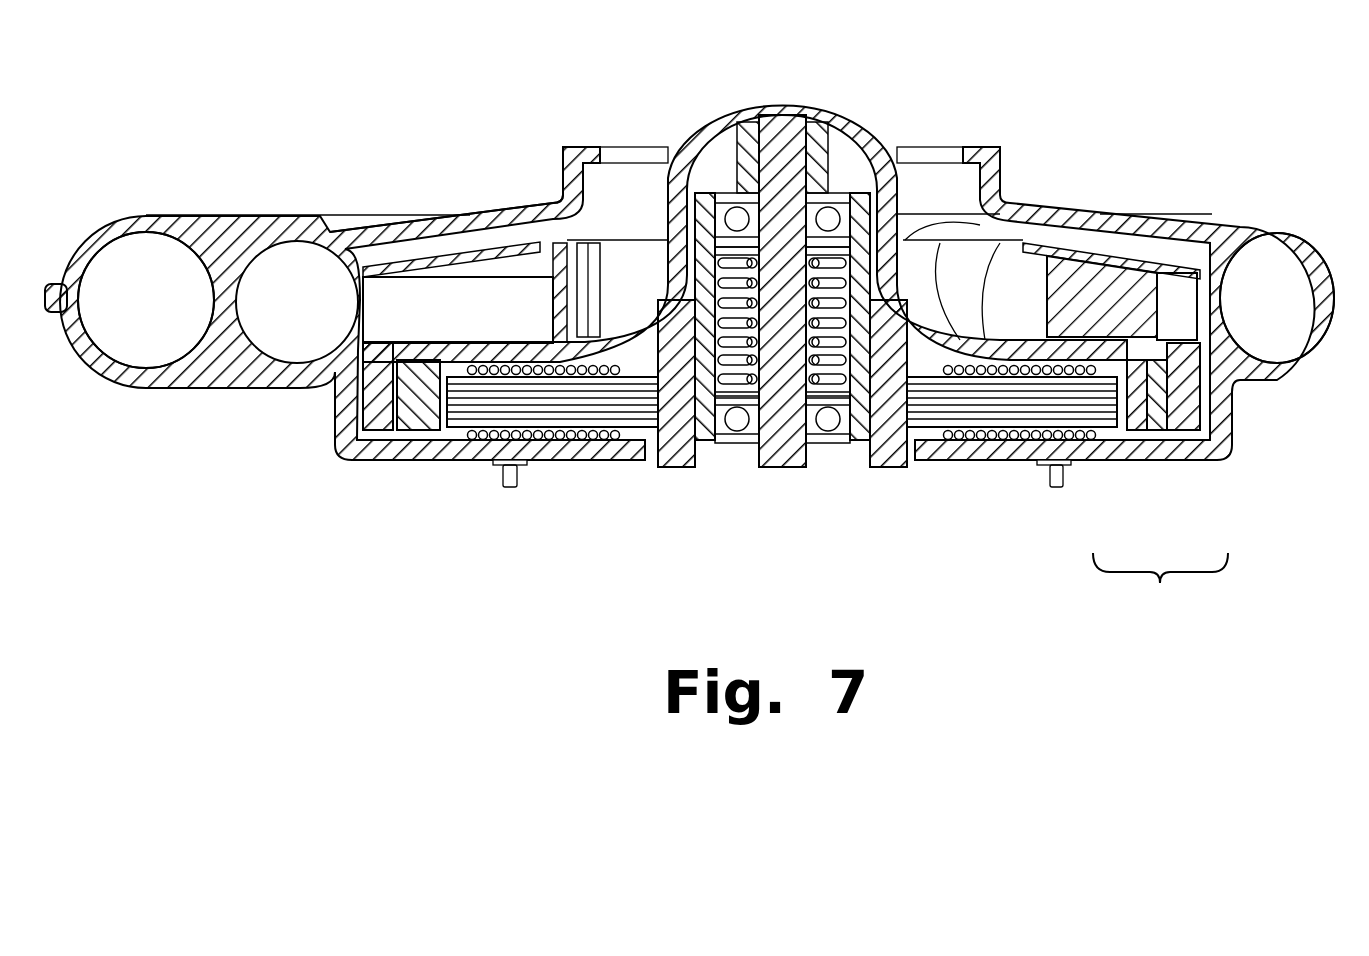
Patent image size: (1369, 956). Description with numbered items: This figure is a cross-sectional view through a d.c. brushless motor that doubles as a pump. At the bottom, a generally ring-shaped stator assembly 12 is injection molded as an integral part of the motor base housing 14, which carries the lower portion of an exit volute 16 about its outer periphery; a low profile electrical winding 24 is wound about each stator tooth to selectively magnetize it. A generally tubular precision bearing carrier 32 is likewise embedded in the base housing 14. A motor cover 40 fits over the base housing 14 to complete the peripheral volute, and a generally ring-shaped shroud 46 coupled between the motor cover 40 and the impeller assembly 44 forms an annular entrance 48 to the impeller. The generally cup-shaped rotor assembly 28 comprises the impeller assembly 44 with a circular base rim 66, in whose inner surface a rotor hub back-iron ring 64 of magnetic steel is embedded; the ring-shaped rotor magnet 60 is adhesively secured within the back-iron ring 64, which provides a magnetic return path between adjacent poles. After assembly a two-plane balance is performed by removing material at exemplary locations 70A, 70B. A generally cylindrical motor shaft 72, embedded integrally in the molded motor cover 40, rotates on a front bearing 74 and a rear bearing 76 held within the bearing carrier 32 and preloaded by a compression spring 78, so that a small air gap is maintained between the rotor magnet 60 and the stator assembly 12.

The stator assembly 12 is at (983, 413).
The motor base housing 14 is at (377, 460).
The exit volute 16 is at (137, 263).
The electrical winding 24 is at (563, 443).
The rotor assembly 28 is at (1160, 587).
The precision bearing carrier 32 is at (698, 215).
The motor cover 40 is at (513, 208).
The impeller assembly 44 is at (1083, 268).
The shroud 46 is at (418, 263).
The annular entrance 48 is at (938, 157).
The rotor magnet 60 is at (1132, 445).
The rotor hub back-iron ring 64 is at (1158, 445).
The circular base rim 66 is at (373, 403).
The balance material removal location 70A is at (1185, 293).
The balance material removal location 70B is at (1200, 417).
The motor shaft 72 is at (782, 115).
The front bearing 74 is at (712, 191).
The rear bearing 76 is at (737, 432).
The compression spring 78 is at (890, 187).